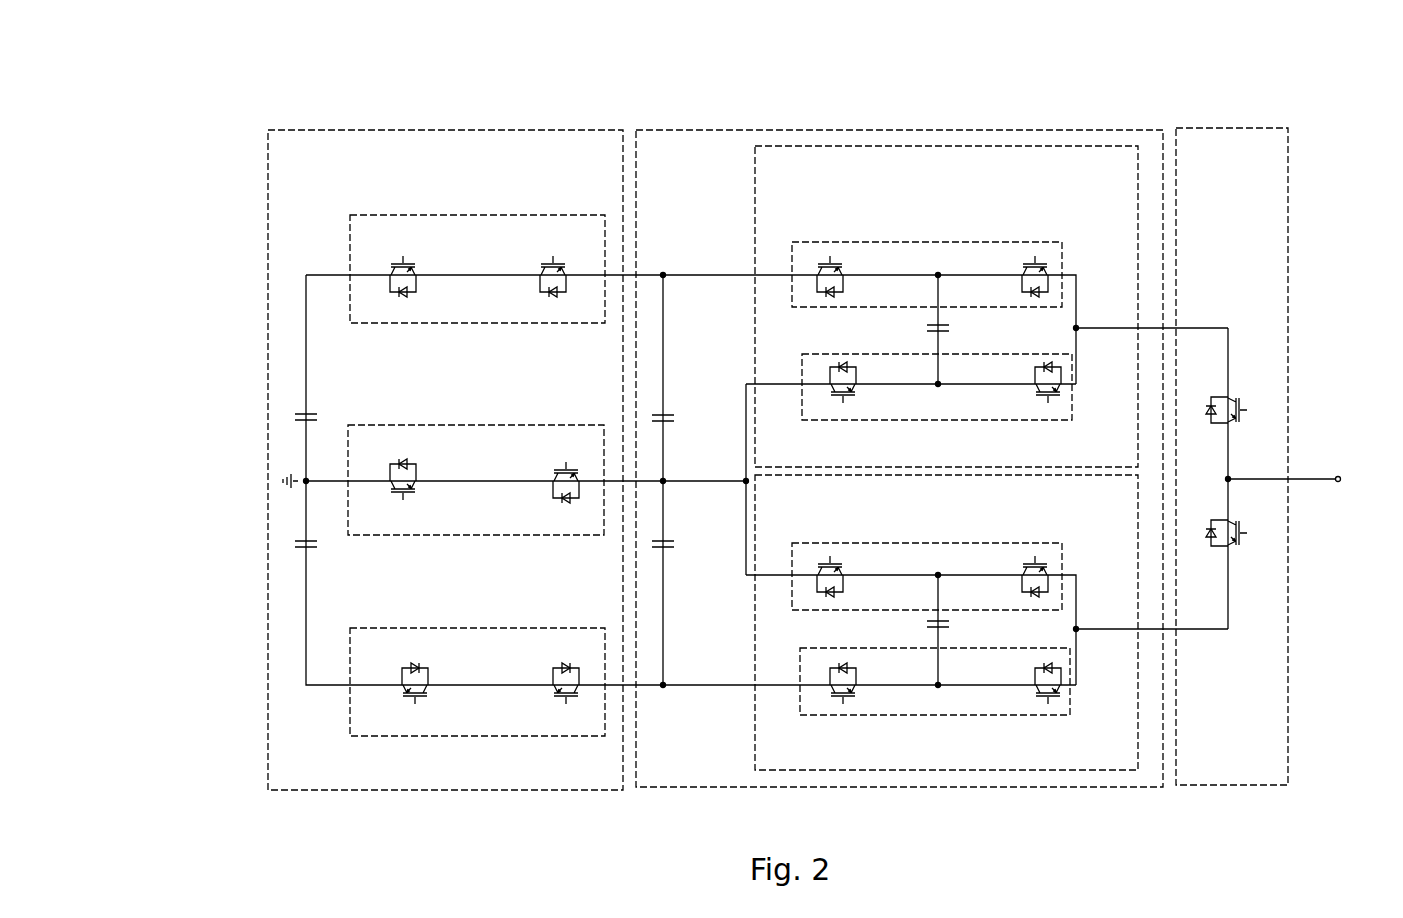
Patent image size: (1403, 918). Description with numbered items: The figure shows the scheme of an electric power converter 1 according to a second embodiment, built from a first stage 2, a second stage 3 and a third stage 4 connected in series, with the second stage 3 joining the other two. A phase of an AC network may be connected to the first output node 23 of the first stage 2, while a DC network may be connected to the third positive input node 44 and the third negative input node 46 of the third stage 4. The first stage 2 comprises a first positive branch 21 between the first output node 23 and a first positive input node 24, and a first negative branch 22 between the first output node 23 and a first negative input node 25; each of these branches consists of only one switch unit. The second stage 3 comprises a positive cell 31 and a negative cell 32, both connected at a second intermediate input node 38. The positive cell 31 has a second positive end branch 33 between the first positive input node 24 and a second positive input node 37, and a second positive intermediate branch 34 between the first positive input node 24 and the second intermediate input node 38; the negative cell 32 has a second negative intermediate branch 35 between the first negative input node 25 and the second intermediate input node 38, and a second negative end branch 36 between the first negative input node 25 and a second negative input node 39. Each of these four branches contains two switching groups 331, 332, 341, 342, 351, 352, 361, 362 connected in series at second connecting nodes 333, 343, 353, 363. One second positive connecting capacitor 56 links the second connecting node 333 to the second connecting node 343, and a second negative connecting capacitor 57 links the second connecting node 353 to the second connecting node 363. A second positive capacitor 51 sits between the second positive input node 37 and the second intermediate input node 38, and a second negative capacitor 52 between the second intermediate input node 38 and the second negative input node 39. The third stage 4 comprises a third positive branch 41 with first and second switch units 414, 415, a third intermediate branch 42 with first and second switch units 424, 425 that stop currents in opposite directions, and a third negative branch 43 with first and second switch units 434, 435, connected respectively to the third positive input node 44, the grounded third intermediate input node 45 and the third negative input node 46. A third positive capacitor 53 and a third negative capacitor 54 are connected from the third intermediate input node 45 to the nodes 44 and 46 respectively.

The electric power converter 1 is at (352, 108).
The first stage 2 is at (1242, 128).
The second stage 3 is at (924, 130).
The third stage 4 is at (445, 130).
The first positive branch 21 is at (1258, 405).
The first negative branch 22 is at (1260, 541).
The first output node 23 is at (1228, 479).
The first positive input node 24 is at (1078, 327).
The first negative input node 25 is at (1078, 628).
The positive cell 31 is at (755, 204).
The negative cell 32 is at (755, 668).
The second positive end branch 33 is at (960, 242).
The second positive intermediate branch 34 is at (1072, 390).
The second negative intermediate branch 35 is at (952, 543).
The second negative end branch 36 is at (895, 715).
The second positive input node 37 is at (663, 275).
The second intermediate input node 38 is at (663, 481).
The second negative input node 39 is at (663, 687).
The third positive branch 41 is at (350, 248).
The third intermediate branch 42 is at (580, 425).
The third negative branch 43 is at (350, 666).
The third positive input node 44 is at (306, 277).
The third intermediate input node 45 is at (306, 483).
The third negative input node 46 is at (306, 687).
The second positive capacitor 51 is at (674, 410).
The second negative capacitor 52 is at (674, 556).
The third positive capacitor 53 is at (330, 403).
The third negative capacitor 54 is at (313, 556).
The second positive connecting capacitor 56 is at (916, 327).
The second negative connecting capacitor 57 is at (918, 621).
The switching group 331 is at (816, 250).
The switching group 332 is at (1022, 252).
The second connecting node 333 is at (938, 275).
The switching group 341 is at (830, 361).
The switching group 342 is at (1032, 368).
The second connecting node 343 is at (938, 386).
The switching group 351 is at (816, 551).
The switching group 352 is at (1022, 551).
The second connecting node 353 is at (938, 575).
The switching group 361 is at (830, 708).
The switching group 362 is at (1046, 713).
The second connecting node 363 is at (938, 687).
The first switch unit 414 is at (420, 246).
The second switch unit 415 is at (538, 246).
The first switch unit 424 is at (421, 452).
The second switch unit 425 is at (556, 450).
The first switch unit 434 is at (431, 648).
The second switch unit 435 is at (555, 650).